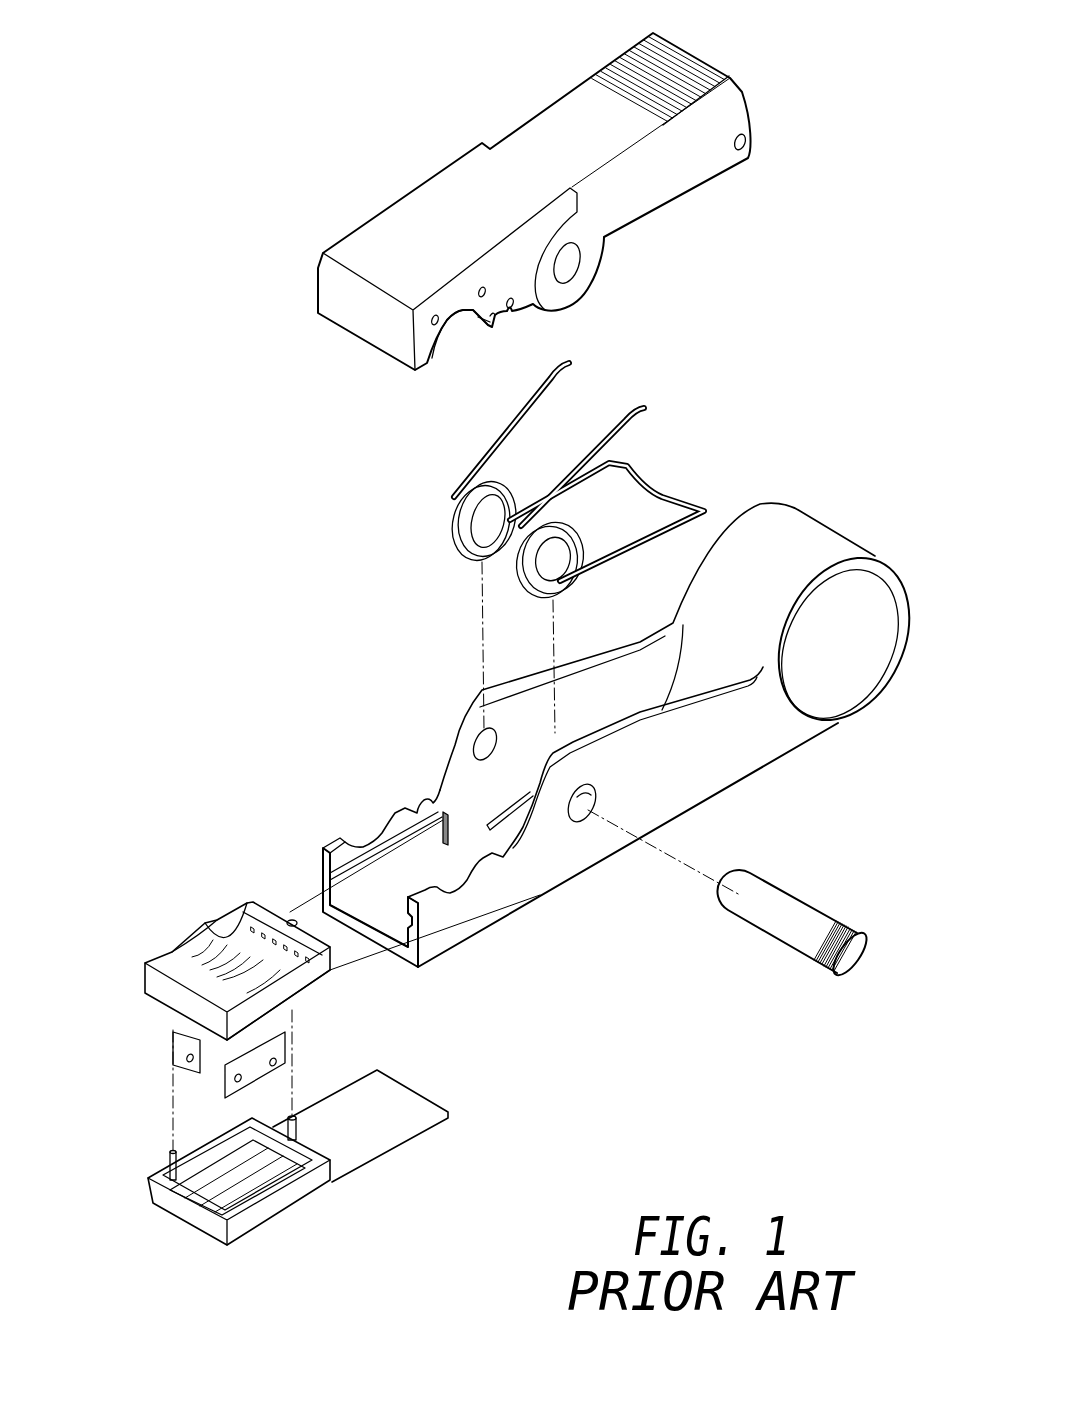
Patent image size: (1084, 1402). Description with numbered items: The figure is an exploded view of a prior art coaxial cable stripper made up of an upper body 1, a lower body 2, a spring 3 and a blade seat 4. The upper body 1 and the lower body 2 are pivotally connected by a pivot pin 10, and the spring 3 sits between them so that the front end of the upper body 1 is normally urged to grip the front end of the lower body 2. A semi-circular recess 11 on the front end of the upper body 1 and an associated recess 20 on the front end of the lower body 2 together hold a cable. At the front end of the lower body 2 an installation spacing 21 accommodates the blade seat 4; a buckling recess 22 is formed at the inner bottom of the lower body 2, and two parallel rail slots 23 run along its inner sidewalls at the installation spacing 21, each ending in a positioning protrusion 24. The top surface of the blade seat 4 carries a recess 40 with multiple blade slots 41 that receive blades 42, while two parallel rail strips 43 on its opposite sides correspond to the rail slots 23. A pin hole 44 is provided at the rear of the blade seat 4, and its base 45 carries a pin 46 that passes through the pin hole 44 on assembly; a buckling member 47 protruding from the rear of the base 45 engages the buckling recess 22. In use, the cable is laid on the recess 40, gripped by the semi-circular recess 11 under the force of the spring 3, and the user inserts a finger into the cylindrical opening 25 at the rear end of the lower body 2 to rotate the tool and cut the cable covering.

The upper body 1 is at (520, 225).
The semi-circular recess 11 is at (448, 322).
The lower body 2 is at (609, 736).
The recess 20 is at (369, 827).
The installation spacing 21 is at (378, 905).
The buckling recess 22 is at (513, 823).
The parallel rail slots 23 is at (330, 880).
The positioning protrusion 24 is at (438, 812).
The cylindrical opening 25 is at (837, 677).
The spring 3 is at (462, 541).
The pivot pin 10 is at (777, 923).
The blade seat 4 is at (315, 1042).
The recess 40 is at (270, 938).
The blade slots 41 is at (225, 947).
The blades 42 is at (195, 1065).
The parallel rail strips 43 is at (292, 1000).
The pin hole 44 is at (292, 920).
The base 45 is at (277, 1205).
The pin 46 is at (298, 1117).
The buckling member 47 is at (412, 1115).